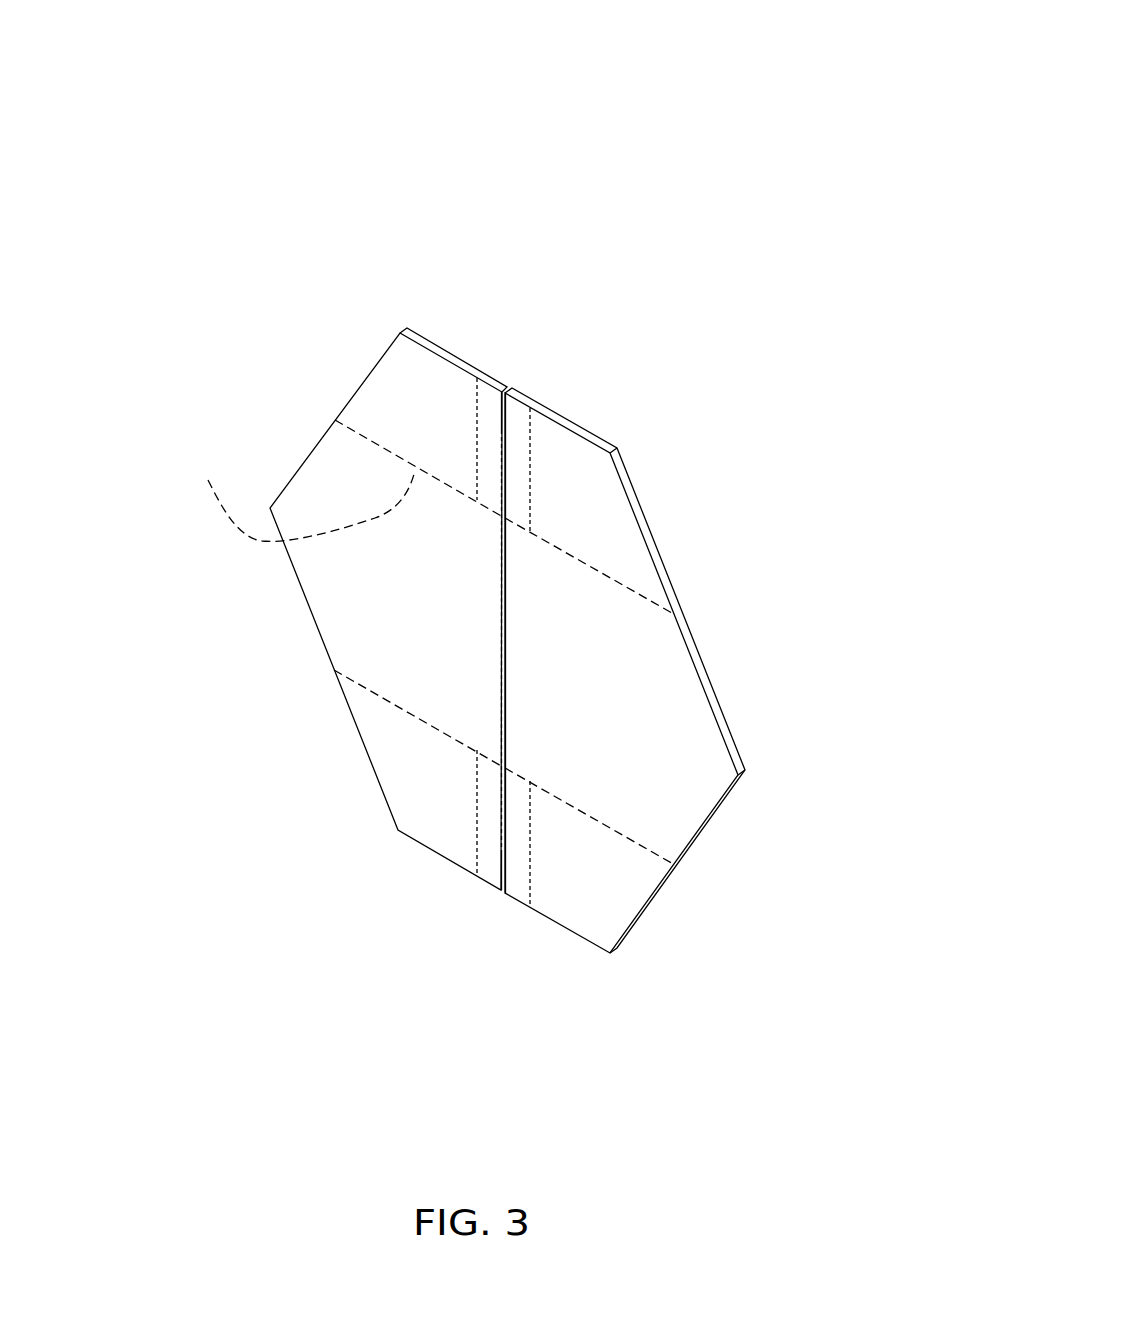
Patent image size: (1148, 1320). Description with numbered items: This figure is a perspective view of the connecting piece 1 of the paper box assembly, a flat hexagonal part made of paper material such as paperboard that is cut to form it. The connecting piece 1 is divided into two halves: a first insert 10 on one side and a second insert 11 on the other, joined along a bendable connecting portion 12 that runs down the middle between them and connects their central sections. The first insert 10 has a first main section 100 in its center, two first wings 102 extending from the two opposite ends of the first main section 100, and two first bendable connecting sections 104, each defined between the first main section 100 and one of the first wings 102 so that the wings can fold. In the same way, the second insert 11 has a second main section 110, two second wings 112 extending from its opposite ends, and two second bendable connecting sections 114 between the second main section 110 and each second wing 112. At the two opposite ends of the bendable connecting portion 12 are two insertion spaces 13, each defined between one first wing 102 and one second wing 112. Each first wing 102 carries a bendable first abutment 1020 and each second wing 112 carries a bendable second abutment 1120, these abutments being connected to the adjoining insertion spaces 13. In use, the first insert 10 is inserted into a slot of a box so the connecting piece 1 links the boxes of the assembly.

The connecting piece 1 is at (617, 133).
The first insert 10 is at (243, 283).
The first main section 100 is at (333, 493).
The first wings 102 is at (392, 392).
The first bendable connecting sections 104 is at (293, 490).
The bendable first abutment 1020 is at (487, 403).
The second insert 11 is at (762, 405).
The second main section 110 is at (652, 688).
The second wings 112 is at (595, 505).
The second bendable connecting sections 114 is at (588, 567).
The bendable second abutment 1120 is at (520, 427).
The bendable connecting portion 12 is at (500, 662).
The insertion spaces 13 is at (503, 457).